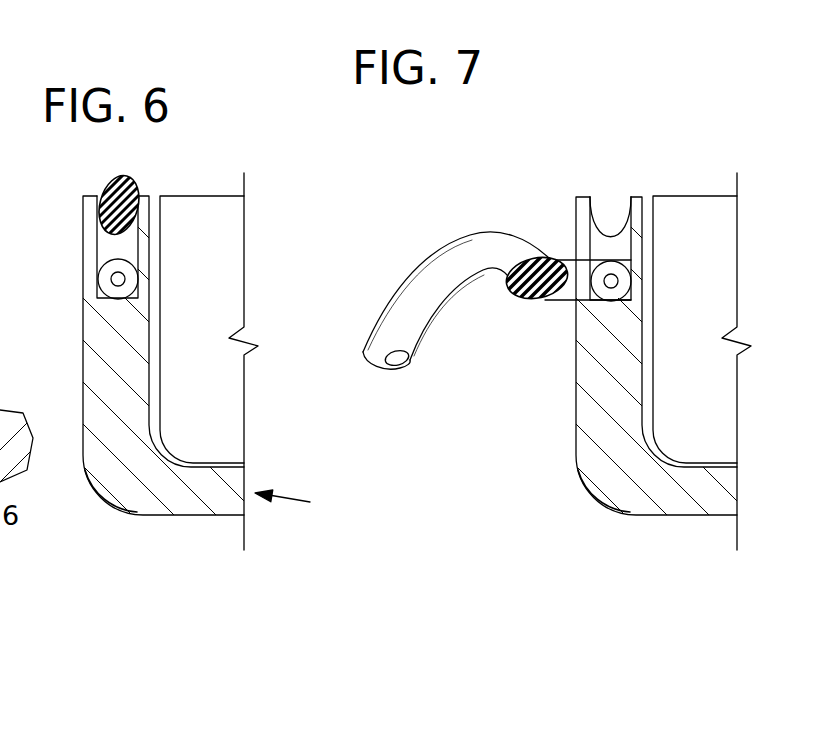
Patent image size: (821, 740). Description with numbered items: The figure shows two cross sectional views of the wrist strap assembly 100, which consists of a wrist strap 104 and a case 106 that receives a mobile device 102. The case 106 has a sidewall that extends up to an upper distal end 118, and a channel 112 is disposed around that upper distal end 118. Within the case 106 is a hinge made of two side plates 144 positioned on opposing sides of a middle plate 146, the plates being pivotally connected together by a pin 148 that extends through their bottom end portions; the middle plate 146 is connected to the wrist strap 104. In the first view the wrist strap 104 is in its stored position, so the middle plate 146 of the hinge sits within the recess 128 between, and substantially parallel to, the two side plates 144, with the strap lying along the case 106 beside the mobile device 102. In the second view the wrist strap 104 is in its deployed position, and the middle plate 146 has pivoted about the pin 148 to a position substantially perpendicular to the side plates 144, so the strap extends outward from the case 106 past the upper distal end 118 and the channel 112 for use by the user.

In FIG. 6, the wrist strap assembly 100 is at (306, 497).
In FIG. 6, the mobile device 102 is at (212, 222).
In FIG. 7, the mobile device 102 is at (703, 420).
In FIG. 6, the wrist strap 104 is at (122, 177).
In FIG. 7, the wrist strap 104 is at (439, 267).
In FIG. 6, the case 106 is at (149, 516).
In FIG. 7, the case 106 is at (606, 514).
In FIG. 7, the channel 112 is at (610, 236).
In FIG. 7, the upper distal end 118 is at (578, 197).
In FIG. 6, the recess 128 is at (88, 250).
In FIG. 7, the side plates 144 is at (610, 248).
In FIG. 6, the middle plate 146 is at (125, 250).
In FIG. 7, the middle plate 146 is at (568, 288).
In FIG. 6, the pin 148 is at (120, 279).
In FIG. 7, the pin 148 is at (612, 283).